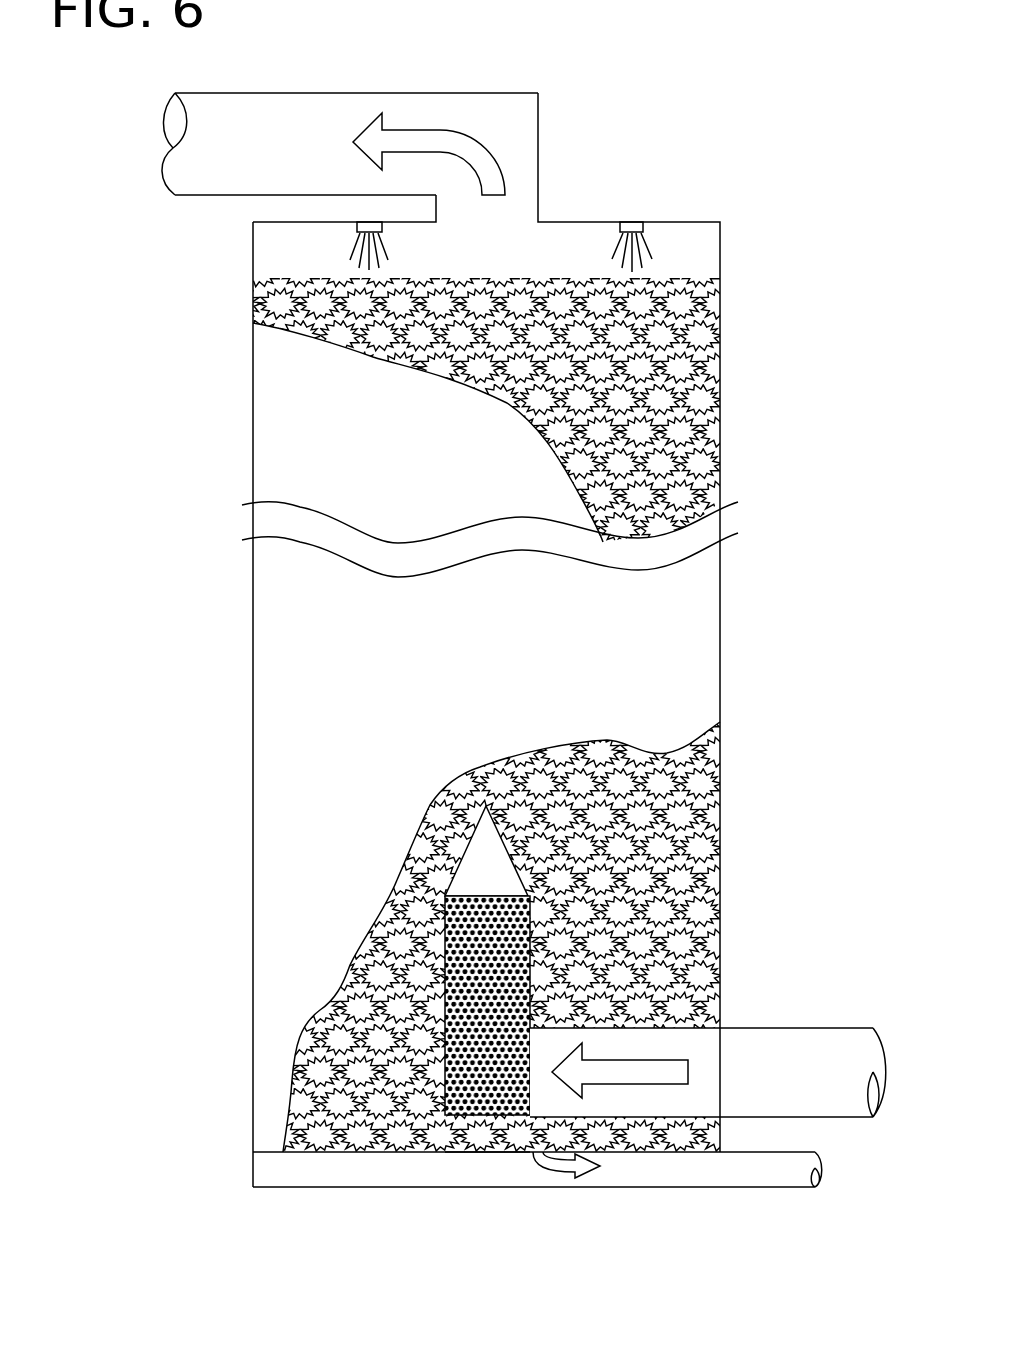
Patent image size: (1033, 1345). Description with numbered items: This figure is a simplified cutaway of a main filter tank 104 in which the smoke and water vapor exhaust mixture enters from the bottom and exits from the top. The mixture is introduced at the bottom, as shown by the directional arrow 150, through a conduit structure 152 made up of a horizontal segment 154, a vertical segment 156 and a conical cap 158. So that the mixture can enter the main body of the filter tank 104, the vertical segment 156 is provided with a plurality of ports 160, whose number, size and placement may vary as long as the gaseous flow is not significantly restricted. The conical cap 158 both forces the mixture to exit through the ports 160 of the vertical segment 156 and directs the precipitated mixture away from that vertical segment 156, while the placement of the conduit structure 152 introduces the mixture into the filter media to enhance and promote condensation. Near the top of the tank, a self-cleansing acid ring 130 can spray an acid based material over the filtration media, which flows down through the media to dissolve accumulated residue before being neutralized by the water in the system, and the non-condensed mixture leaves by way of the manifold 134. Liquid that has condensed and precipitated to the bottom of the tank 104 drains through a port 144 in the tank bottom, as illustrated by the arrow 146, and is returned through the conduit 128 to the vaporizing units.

The main filter tank 104 is at (720, 630).
The conduit 128 is at (782, 1188).
The self-cleansing acid ring 130 is at (368, 221).
The manifold 134 is at (560, 213).
The port 144 is at (510, 1147).
The arrow 146 is at (574, 1160).
The directional arrow 150 is at (690, 1073).
The conduit structure 152 is at (403, 828).
The horizontal segment 154 is at (653, 1103).
The vertical segment 156 is at (443, 1013).
The conical cap 158 is at (470, 867).
The ports 160 is at (470, 1147).